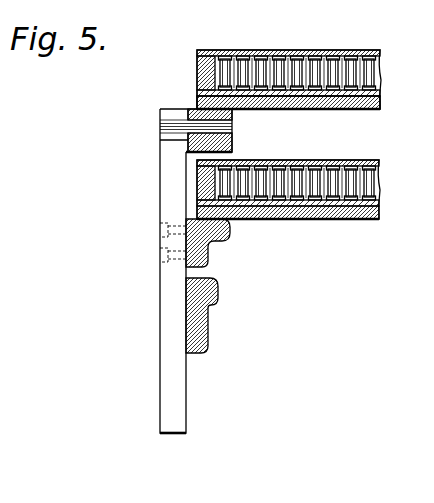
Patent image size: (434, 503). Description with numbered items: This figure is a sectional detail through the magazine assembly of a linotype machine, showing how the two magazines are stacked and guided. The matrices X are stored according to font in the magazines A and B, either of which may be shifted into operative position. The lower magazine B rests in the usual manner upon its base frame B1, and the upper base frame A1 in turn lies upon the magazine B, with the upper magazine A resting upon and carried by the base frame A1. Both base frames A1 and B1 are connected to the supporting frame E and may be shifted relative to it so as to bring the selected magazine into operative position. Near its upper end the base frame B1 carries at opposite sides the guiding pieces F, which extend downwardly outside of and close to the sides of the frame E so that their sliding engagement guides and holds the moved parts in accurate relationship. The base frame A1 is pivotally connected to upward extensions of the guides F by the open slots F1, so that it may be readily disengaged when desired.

The magazine A is at (351, 49).
The base frame A1 is at (266, 110).
The magazine B is at (341, 160).
The base frame B1 is at (285, 221).
The matrices X is at (358, 70).
The supporting frame E is at (203, 321).
The guiding pieces F is at (165, 284).
The open slots F1 is at (163, 125).